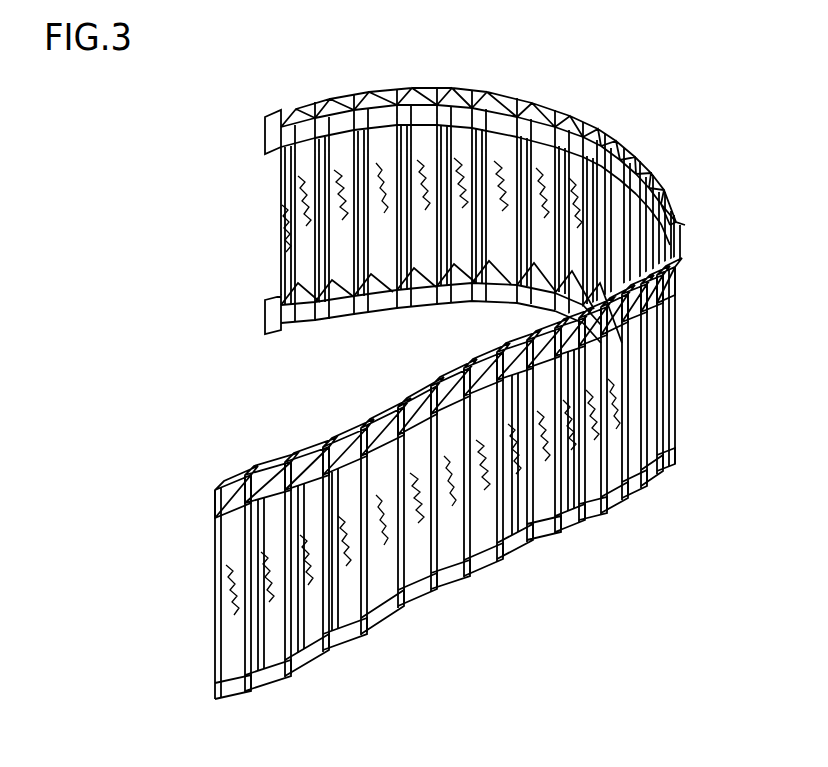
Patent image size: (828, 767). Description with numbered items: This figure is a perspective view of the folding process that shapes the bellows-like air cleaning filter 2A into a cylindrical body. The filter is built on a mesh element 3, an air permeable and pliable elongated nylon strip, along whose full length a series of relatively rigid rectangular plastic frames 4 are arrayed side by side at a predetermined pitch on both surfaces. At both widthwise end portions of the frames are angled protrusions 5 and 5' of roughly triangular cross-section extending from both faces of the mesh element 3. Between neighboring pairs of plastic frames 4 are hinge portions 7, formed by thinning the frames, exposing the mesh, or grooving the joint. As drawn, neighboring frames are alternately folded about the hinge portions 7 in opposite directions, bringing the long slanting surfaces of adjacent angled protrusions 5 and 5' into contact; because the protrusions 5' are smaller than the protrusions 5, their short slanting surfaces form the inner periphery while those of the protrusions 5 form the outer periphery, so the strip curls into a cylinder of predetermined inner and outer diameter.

The bellows-like air cleaning filter 2A is at (596, 91).
The mesh element 3 is at (285, 235).
The plastic frames 4 is at (486, 82).
The angled protrusions 5 is at (483, 352).
The angled protrusions 5' is at (271, 454).
The hinge portions 7 is at (433, 313).